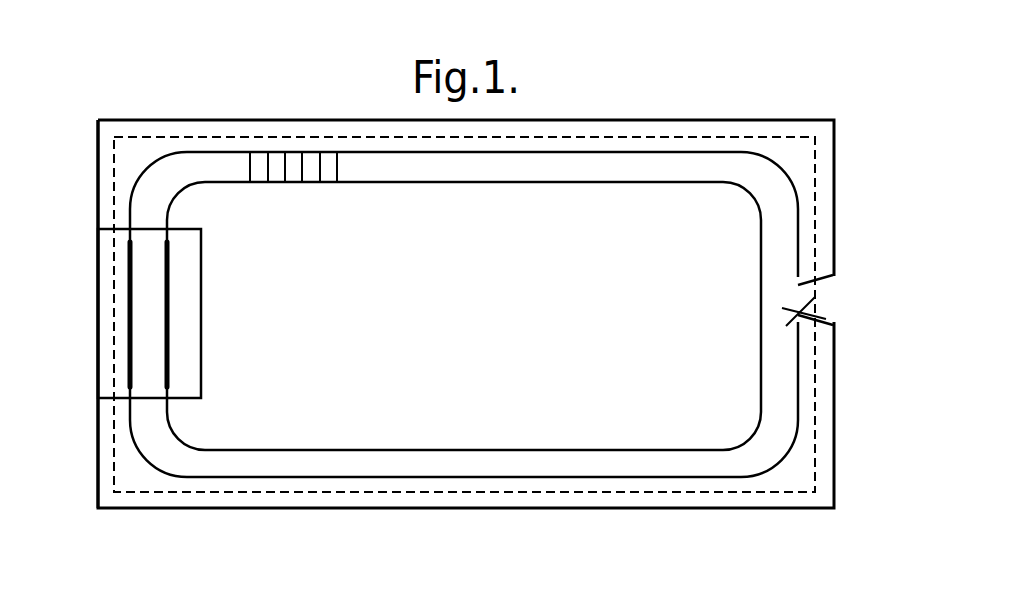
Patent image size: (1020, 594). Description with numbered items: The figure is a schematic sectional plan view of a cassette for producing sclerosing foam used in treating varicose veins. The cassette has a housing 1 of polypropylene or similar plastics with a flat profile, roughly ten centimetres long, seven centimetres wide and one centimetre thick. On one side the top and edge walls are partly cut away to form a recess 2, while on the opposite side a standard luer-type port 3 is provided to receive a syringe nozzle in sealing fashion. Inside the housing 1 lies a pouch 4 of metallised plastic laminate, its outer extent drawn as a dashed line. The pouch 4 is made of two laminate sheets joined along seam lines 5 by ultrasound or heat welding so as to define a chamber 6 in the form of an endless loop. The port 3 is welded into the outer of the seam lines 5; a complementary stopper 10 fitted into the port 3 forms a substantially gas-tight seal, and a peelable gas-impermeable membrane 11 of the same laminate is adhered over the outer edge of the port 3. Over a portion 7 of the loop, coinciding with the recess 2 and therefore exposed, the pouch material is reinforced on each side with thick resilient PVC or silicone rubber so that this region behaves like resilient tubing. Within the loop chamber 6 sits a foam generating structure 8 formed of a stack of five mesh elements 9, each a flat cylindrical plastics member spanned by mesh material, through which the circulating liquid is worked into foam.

The housing 1 is at (97, 141).
The recess 2 is at (98, 281).
The luer-type port 3 is at (797, 283).
The pouch 4 is at (797, 147).
The seam lines 5 is at (508, 183).
The chamber 6 is at (422, 165).
The reinforced portion of the loop 7 is at (130, 335).
The foam generating structure 8 is at (302, 183).
The mesh elements 9 is at (273, 172).
The stopper 10 is at (786, 326).
The membrane 11 is at (834, 287).